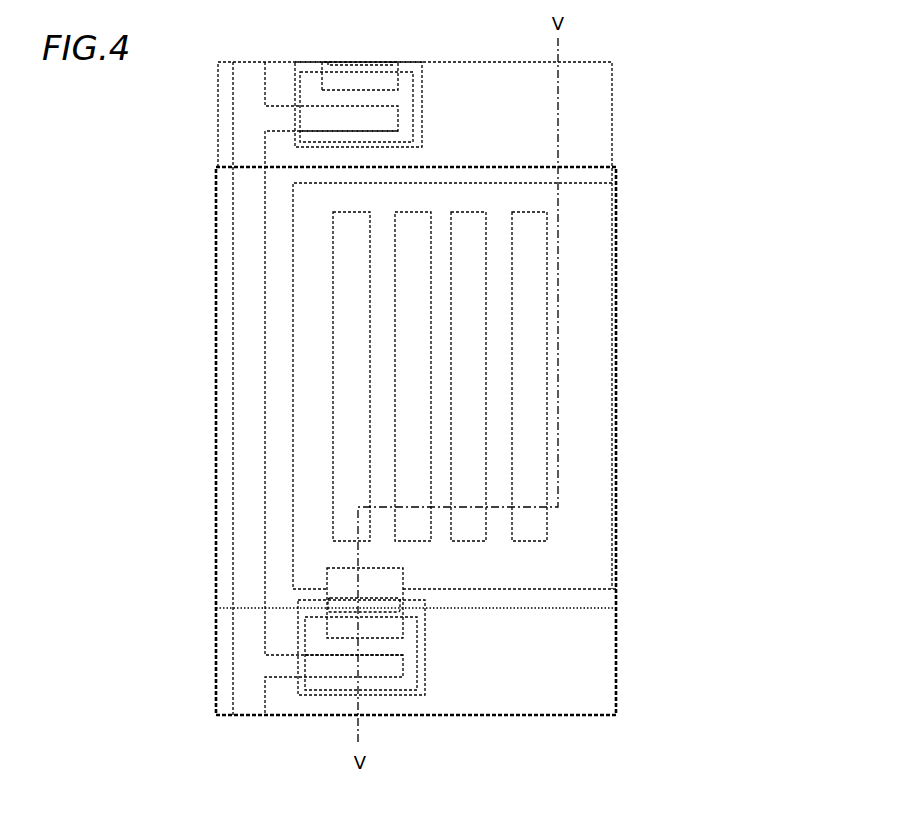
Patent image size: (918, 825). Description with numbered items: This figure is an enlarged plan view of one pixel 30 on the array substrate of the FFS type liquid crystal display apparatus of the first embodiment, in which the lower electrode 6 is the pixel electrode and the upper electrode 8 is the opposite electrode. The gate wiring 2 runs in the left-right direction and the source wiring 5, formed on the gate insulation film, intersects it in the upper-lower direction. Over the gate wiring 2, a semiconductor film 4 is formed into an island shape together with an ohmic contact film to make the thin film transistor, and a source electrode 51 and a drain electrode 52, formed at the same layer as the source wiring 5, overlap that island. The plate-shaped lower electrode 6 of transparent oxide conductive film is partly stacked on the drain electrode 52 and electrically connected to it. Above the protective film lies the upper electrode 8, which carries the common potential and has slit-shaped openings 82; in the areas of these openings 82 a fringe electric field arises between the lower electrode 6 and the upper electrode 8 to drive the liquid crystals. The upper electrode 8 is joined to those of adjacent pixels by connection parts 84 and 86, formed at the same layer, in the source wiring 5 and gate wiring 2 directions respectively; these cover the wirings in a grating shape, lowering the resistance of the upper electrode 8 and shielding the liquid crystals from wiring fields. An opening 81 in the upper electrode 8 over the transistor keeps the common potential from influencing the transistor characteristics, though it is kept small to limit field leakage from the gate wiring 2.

The gate wiring 2 is at (603, 638).
The semiconductor film 4 is at (312, 635).
The source wiring 5 is at (248, 667).
The lower electrode 6 is at (445, 588).
The upper electrode 8 is at (505, 325).
The pixel 30 is at (220, 712).
The source electrode 51 is at (335, 667).
The drain electrode 52 is at (385, 627).
The opening 81 is at (422, 695).
The openings 82 is at (478, 428).
The connection part 84 is at (490, 693).
The connection part 86 is at (245, 405).